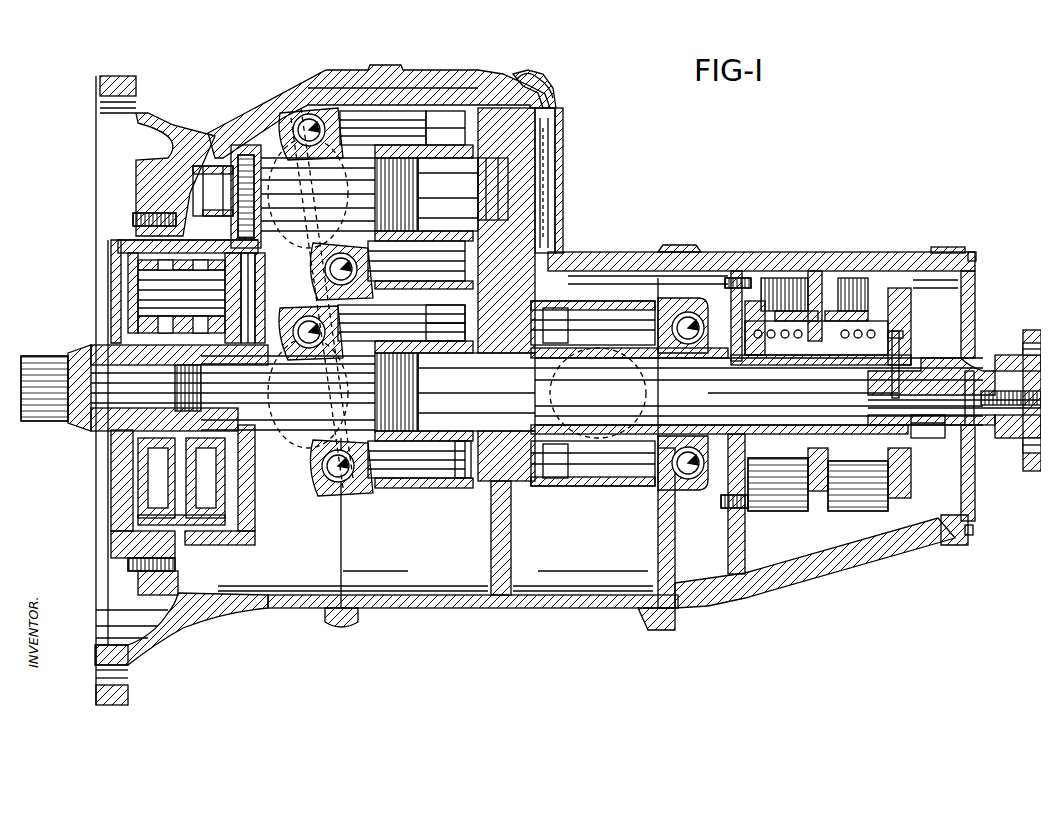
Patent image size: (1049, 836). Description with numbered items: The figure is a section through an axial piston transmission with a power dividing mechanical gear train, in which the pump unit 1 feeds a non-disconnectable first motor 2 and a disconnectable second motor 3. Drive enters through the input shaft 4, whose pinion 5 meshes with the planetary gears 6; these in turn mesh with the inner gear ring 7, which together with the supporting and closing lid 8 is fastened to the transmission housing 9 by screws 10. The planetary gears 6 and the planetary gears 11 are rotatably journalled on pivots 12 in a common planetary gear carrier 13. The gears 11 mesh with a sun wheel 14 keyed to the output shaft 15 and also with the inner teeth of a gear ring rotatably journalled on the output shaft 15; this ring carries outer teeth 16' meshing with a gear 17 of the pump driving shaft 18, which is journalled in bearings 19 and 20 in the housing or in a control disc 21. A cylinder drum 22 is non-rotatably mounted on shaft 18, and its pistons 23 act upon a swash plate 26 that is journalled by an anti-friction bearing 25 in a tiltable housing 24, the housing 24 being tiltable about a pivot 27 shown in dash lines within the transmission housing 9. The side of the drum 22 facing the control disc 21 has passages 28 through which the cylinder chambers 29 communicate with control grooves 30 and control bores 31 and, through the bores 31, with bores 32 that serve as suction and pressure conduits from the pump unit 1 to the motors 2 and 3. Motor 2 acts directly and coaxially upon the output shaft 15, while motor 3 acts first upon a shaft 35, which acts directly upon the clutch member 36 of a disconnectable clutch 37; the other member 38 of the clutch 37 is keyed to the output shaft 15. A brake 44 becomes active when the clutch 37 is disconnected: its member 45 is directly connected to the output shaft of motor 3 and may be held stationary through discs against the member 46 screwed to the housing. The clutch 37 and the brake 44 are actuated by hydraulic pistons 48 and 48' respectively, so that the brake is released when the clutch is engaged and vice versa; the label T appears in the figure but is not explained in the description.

The pump unit 1 is at (393, 93).
The first motor 2 is at (400, 495).
The second motor 3 is at (600, 280).
The input shaft 4 is at (38, 350).
The pinion 5 is at (158, 435).
The planetary gears 6 is at (135, 318).
The inner gear ring 7 is at (110, 232).
The supporting and closing lid 8 is at (103, 497).
The transmission housing 9 is at (192, 610).
The screws 10 is at (125, 212).
The planetary gears 11 is at (195, 258).
The pivots 12 is at (115, 270).
The planetary gear carrier 13 is at (230, 475).
The sun wheel 14 is at (195, 435).
The output shaft 15 is at (275, 418).
The outer teeth 16' is at (220, 550).
The gear 17 is at (238, 137).
The pump driving shaft 18 is at (283, 215).
The bearing 19 is at (205, 150).
The bearing 20 is at (525, 132).
The control disc 21 is at (542, 155).
The cylinder drum 22 is at (440, 140).
The pistons 23 is at (355, 103).
The tiltable housing 24 is at (300, 100).
The anti-friction bearing 25 is at (308, 255).
The swash plate 26 is at (302, 115).
The pivot 27 is at (600, 380).
The passages 28 is at (545, 110).
The cylinder chambers 29 is at (455, 103).
The control grooves 30 is at (510, 72).
The control bores 31 is at (540, 80).
The bores 32 is at (548, 208).
The shaft 35 is at (758, 416).
The clutch member 36 is at (815, 300).
The disconnectable clutch 37 is at (868, 508).
The clutch member 38 is at (862, 270).
The brake 44 is at (765, 507).
The brake member 45 is at (808, 335).
The brake member 46 is at (782, 272).
The hydraulic piston 48 is at (931, 356).
The hydraulic piston 48' is at (745, 258).
The torque T is at (412, 100).